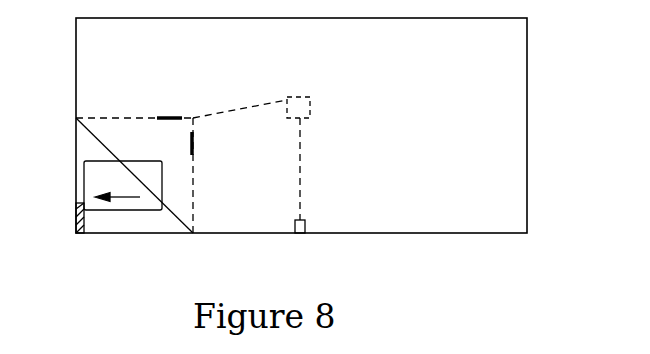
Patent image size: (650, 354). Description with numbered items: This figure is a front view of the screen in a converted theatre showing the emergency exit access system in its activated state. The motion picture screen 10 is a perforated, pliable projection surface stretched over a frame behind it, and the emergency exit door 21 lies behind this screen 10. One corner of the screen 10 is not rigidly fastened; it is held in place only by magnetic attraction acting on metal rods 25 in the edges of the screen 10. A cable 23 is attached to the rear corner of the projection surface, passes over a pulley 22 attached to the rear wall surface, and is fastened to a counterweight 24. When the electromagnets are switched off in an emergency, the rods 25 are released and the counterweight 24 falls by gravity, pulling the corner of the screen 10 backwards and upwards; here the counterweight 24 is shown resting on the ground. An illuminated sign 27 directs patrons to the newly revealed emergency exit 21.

The motion picture screen 10 is at (508, 83).
The emergency exit door 21 is at (78, 215).
The pulley 22 is at (311, 109).
The cable 23 is at (300, 168).
The counterweight 24 is at (303, 222).
The metal rods 25 is at (170, 117).
The illuminated sign 27 is at (86, 167).